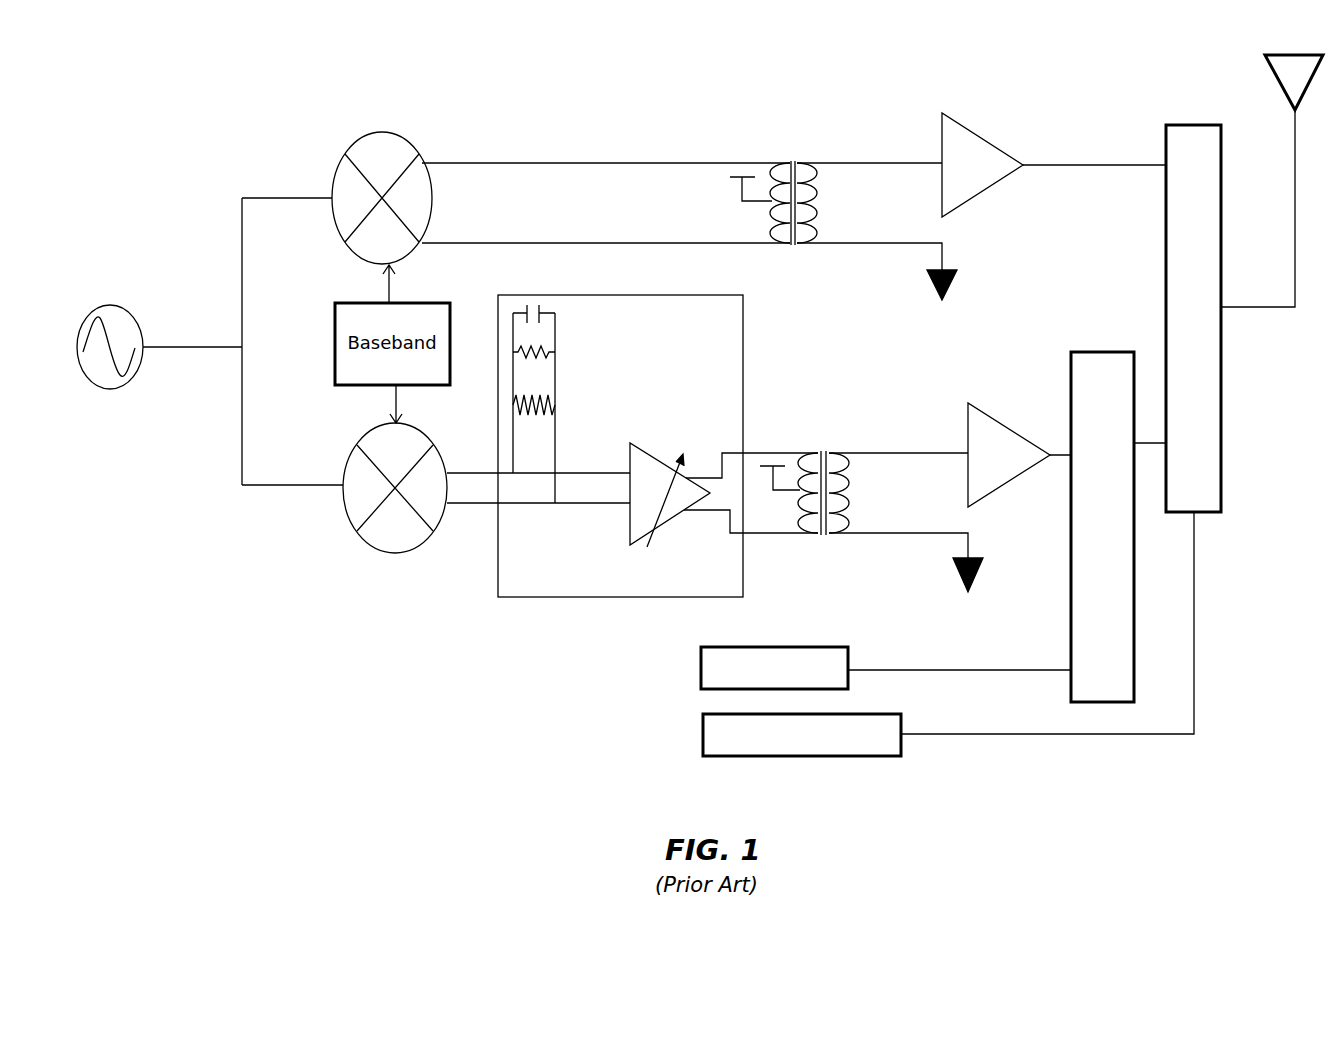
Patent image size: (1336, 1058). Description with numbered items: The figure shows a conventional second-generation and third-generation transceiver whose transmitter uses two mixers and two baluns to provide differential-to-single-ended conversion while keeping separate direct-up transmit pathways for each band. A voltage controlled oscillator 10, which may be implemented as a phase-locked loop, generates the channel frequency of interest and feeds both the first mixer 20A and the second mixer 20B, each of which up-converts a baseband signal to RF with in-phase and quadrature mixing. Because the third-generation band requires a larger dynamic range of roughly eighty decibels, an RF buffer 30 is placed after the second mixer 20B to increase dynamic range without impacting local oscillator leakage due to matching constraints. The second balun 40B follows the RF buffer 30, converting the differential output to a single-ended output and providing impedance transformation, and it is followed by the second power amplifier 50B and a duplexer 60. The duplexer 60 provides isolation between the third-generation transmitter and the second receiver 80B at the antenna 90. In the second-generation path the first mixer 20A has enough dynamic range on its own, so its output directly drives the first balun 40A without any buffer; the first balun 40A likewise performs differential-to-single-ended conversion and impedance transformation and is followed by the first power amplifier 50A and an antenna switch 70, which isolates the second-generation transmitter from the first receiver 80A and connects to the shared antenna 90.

The voltage controlled oscillator 10 is at (100, 389).
The 2G/2.5G mixer 20A is at (345, 168).
The 3G mixer 20B is at (348, 520).
The RF buffer 30 is at (620, 446).
The 2G/2.5G balun 40A is at (788, 131).
The 3G balun 40B is at (815, 410).
The 2G/2.5G power amplifier 50A is at (970, 147).
The 3G power amplifier 50B is at (1000, 439).
The duplexer 60 is at (1103, 350).
The antenna switch 70 is at (1190, 123).
The 2G/2.5G receiver 80A is at (703, 728).
The 3G receiver 80B is at (701, 656).
The antenna 90 is at (1270, 78).